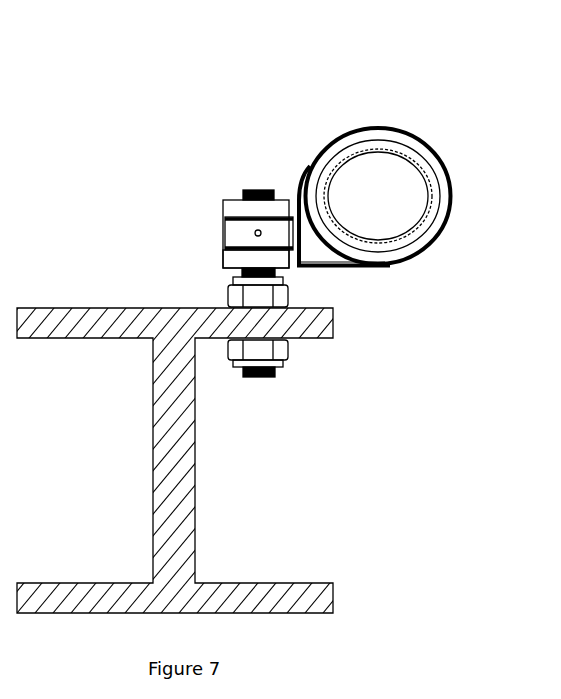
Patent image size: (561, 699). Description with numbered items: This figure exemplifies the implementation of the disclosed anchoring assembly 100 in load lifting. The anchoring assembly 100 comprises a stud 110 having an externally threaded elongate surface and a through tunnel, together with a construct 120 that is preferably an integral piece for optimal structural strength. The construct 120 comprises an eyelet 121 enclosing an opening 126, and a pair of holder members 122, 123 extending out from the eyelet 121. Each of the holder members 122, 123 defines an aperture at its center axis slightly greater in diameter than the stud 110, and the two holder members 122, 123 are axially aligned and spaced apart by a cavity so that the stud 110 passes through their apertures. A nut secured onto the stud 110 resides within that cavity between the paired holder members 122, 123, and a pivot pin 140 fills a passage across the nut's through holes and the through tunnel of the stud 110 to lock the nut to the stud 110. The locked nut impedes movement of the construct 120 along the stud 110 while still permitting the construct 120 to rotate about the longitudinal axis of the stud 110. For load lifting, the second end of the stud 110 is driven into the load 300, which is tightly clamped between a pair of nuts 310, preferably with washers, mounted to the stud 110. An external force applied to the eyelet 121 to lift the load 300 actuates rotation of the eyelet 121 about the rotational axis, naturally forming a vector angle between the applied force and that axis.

The anchoring assembly 100 is at (398, 101).
The construct 120 is at (332, 145).
The eyelet 121 is at (440, 222).
The opening 126 is at (375, 192).
The holder member 122 is at (253, 208).
The pivot pin 140 is at (258, 233).
The holder member 123 is at (227, 253).
The nut 310 is at (277, 292).
The stud 110 is at (243, 377).
The load 300 is at (283, 602).